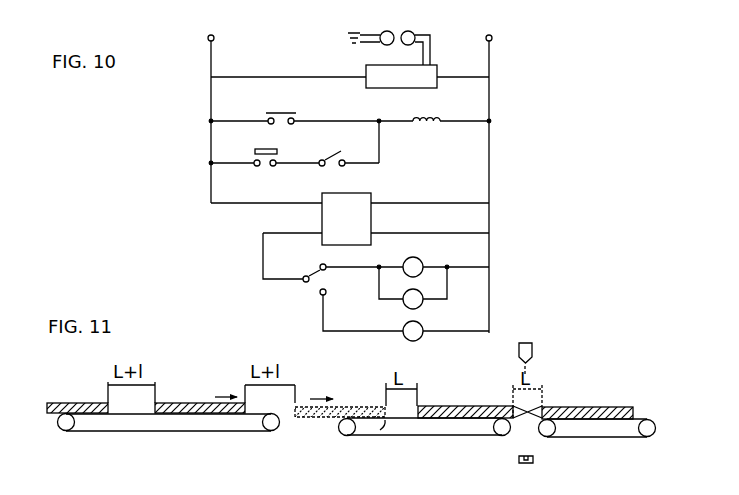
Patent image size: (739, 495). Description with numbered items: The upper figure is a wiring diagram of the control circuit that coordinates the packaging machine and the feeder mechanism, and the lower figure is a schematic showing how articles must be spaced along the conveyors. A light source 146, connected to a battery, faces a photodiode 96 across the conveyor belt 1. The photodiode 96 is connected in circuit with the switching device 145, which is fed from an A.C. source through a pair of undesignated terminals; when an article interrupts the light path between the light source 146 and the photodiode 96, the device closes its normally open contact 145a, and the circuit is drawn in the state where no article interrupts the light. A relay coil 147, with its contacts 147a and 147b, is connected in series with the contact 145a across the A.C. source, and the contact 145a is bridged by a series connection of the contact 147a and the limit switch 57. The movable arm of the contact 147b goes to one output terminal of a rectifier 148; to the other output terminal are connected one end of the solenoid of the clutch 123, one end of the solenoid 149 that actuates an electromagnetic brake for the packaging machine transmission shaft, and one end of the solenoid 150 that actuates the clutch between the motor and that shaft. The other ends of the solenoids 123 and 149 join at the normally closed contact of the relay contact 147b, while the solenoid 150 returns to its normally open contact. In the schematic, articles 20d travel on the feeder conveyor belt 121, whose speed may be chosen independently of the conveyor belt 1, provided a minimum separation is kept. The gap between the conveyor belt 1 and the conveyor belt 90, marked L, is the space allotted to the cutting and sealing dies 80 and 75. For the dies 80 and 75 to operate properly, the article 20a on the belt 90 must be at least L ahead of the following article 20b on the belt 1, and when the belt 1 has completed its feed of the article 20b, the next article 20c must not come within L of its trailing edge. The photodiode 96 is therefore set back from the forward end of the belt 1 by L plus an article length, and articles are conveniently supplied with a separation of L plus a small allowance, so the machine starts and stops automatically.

In FIG. 10, the light source 146 is at (380, 32).
In FIG. 10, the photodiode 96 is at (414, 33).
In FIG. 11, the photodiode 96 is at (380, 430).
In FIG. 10, the switching device 145 is at (405, 77).
In FIG. 10, the normally open contact 145a is at (312, 103).
In FIG. 10, the relay coil 147 is at (437, 118).
In FIG. 10, the limit switch 57 is at (266, 149).
In FIG. 10, the relay contact 147a is at (341, 152).
In FIG. 10, the rectifier 148 is at (362, 205).
In FIG. 10, the relay contact 147b is at (312, 272).
In FIG. 10, the clutch solenoid 123 is at (422, 262).
In FIG. 10, the brake solenoid 149 is at (452, 290).
In FIG. 10, the clutch solenoid 150 is at (422, 326).
In FIG. 11, the conveyor belt 121 is at (127, 416).
In FIG. 11, the article 20d is at (160, 403).
In FIG. 11, the article 20c is at (356, 406).
In FIG. 11, the conveyor belt 1 is at (450, 430).
In FIG. 11, the article 20b is at (467, 410).
In FIG. 11, the article 20a is at (605, 411).
In FIG. 11, the conveyor belt 90 is at (607, 430).
In FIG. 11, the die 80 is at (533, 350).
In FIG. 11, the die 75 is at (533, 458).